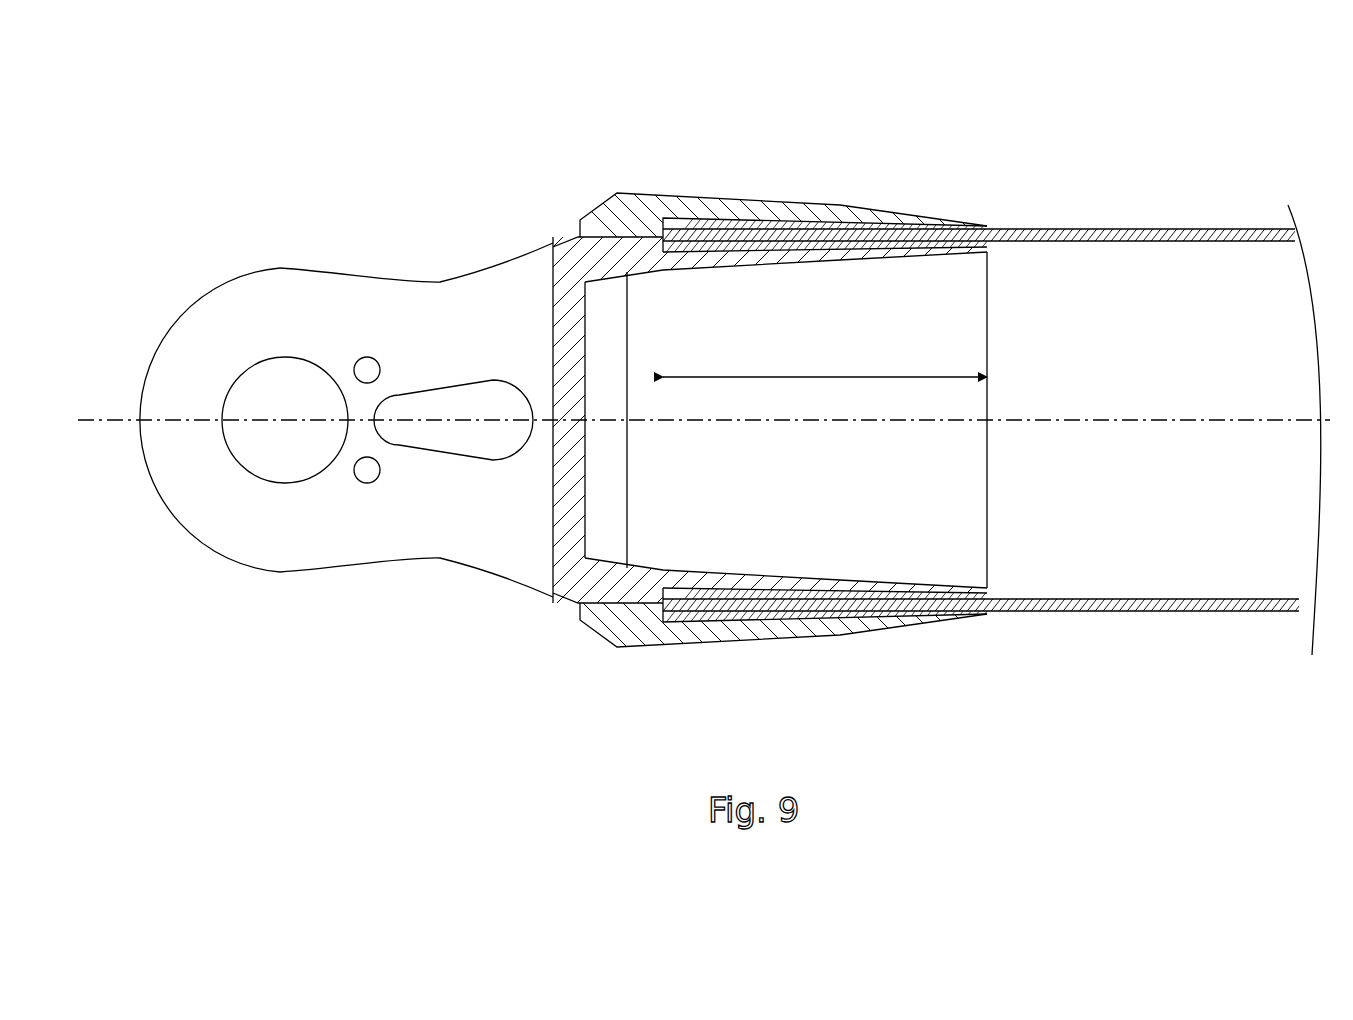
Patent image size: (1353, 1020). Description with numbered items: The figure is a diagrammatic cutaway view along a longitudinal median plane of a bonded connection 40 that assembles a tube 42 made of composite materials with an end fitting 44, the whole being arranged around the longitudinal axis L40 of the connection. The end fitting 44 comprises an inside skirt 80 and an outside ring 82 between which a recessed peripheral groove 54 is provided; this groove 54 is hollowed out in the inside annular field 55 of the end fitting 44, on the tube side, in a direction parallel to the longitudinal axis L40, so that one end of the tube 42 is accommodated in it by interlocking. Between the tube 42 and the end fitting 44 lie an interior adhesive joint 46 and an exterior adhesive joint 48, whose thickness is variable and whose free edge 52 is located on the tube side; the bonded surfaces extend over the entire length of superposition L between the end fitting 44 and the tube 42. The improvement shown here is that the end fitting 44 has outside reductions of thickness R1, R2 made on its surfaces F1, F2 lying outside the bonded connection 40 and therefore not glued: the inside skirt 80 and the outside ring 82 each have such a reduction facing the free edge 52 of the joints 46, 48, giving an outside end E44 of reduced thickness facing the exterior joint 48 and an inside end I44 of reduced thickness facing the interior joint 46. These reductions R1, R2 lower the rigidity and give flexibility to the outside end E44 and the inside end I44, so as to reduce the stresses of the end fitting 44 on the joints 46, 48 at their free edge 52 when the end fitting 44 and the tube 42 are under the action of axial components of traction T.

The bonded connection 40 is at (838, 180).
The tube 42 is at (1153, 228).
The end fitting 44 is at (517, 258).
The interior adhesive joint 46 is at (750, 266).
The exterior adhesive joint 48 is at (918, 210).
The free edge 52 is at (992, 226).
The peripheral groove 54 is at (733, 200).
The inside annular field 55 is at (987, 612).
The inside skirt 80 is at (823, 258).
The outside ring 82 is at (778, 217).
The outside end E44 is at (950, 218).
The inside end I44 is at (946, 258).
The surface of the end fitting F1 is at (793, 262).
The surface of the end fitting F2 is at (690, 197).
The outside reduction of thickness R1 is at (874, 266).
The outside reduction of thickness R2 is at (882, 166).
The length of superposition L is at (835, 372).
The longitudinal axis L40 is at (88, 418).
The axial component of traction T is at (400, 712).